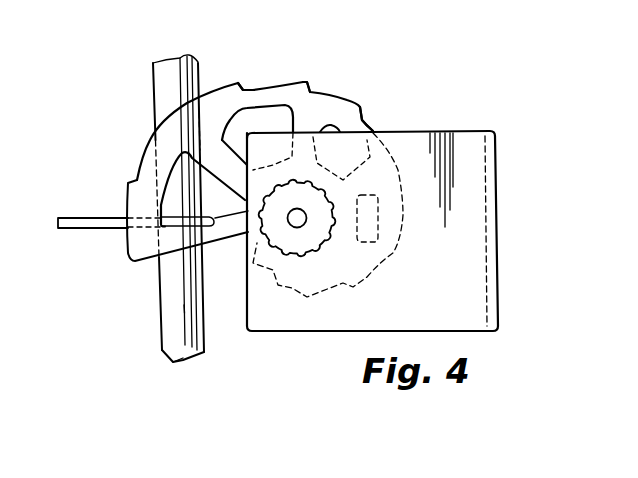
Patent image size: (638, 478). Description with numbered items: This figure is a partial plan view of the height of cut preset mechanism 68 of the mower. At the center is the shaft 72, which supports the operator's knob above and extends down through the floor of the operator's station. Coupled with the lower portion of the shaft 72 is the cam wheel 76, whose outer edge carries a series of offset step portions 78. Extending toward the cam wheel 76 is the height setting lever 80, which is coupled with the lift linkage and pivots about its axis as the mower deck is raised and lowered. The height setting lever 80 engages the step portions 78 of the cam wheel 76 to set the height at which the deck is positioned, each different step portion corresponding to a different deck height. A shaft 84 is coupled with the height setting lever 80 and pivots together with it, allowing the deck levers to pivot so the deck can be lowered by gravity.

The height of cut preset mechanism 68 is at (440, 51).
The shaft 72 is at (306, 222).
The cam wheel 76 is at (237, 85).
The offset step portions 78 is at (243, 88).
The height setting lever 80 is at (98, 217).
The shaft 84 is at (153, 90).